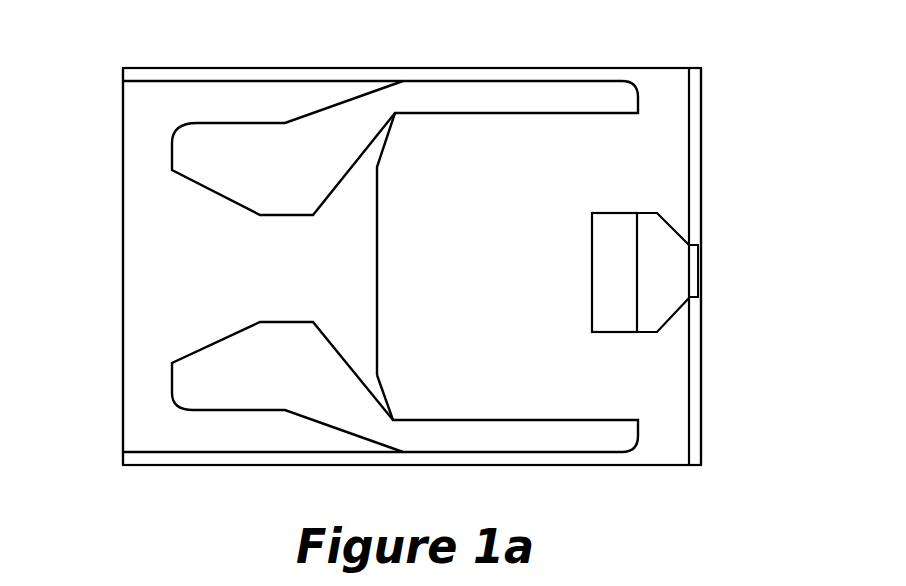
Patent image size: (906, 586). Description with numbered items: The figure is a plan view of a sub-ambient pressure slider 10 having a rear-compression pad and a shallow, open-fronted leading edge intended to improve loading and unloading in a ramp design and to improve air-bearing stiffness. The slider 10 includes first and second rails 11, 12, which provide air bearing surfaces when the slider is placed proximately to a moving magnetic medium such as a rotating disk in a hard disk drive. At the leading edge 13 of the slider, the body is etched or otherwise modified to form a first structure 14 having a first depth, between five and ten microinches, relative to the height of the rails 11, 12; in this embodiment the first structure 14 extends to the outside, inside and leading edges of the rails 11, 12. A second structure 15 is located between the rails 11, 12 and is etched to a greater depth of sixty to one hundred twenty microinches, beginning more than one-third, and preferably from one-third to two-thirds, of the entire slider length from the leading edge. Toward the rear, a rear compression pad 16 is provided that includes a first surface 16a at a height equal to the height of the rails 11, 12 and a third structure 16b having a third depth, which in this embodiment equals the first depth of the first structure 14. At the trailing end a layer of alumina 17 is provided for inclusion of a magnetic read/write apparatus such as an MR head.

The slider 10 is at (183, 68).
The first rail 11 is at (337, 132).
The second rail 12 is at (205, 380).
The leading edge 13 is at (123, 268).
The first structure 14 is at (283, 274).
The second structure 15 is at (494, 274).
The rear compression pad 16 is at (654, 247).
The first surface 16a is at (652, 298).
The third structure 16b is at (612, 277).
The layer of alumina 17 is at (693, 421).